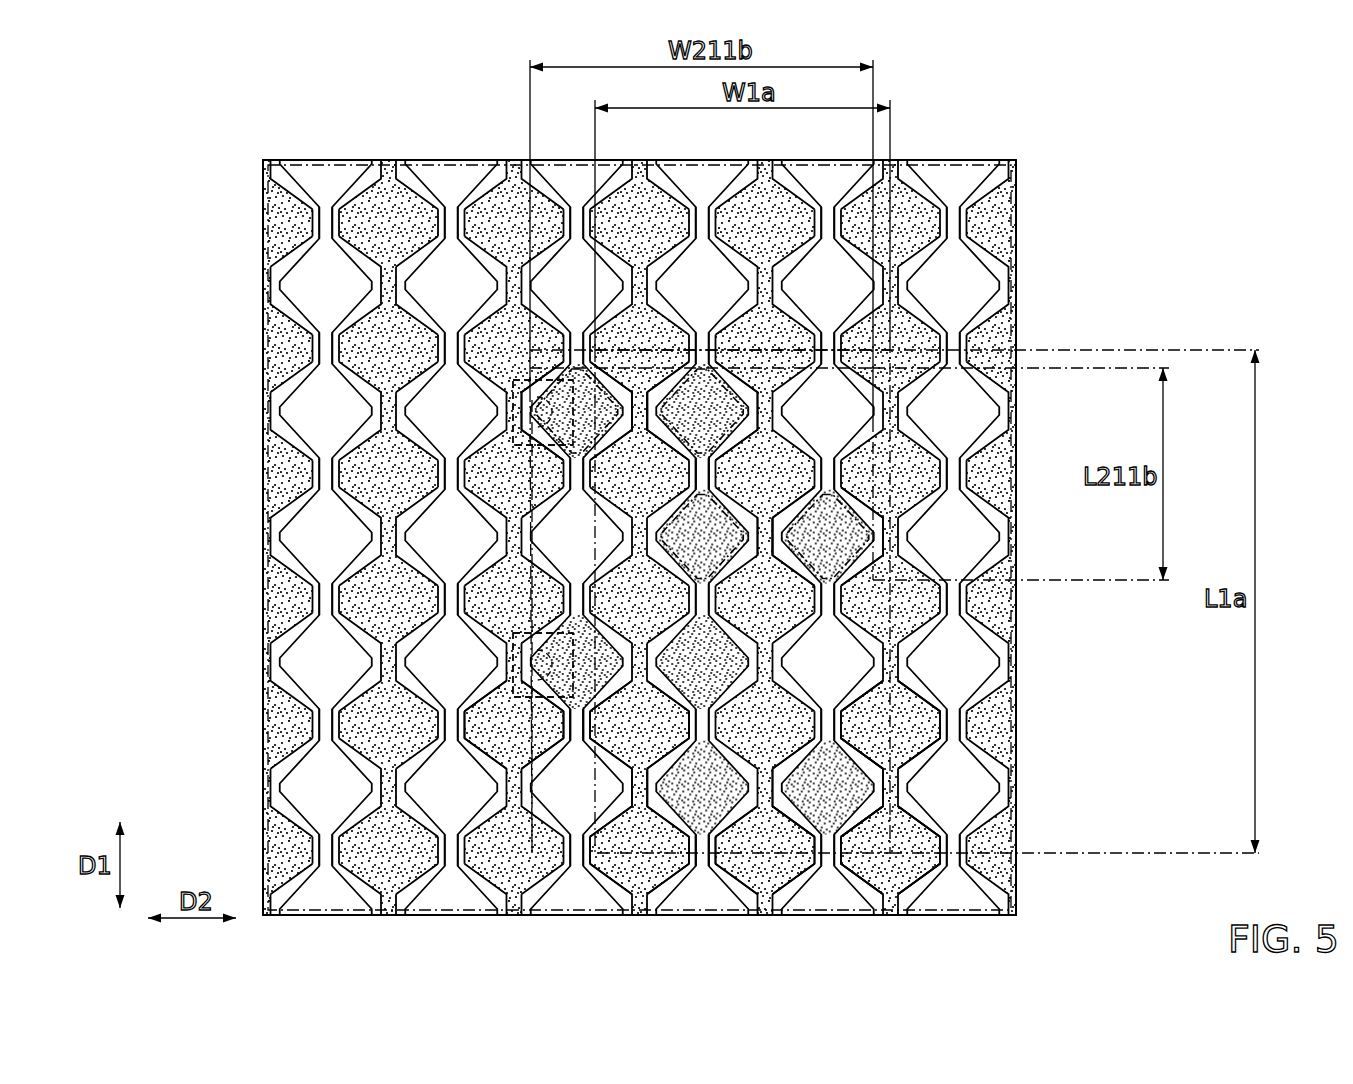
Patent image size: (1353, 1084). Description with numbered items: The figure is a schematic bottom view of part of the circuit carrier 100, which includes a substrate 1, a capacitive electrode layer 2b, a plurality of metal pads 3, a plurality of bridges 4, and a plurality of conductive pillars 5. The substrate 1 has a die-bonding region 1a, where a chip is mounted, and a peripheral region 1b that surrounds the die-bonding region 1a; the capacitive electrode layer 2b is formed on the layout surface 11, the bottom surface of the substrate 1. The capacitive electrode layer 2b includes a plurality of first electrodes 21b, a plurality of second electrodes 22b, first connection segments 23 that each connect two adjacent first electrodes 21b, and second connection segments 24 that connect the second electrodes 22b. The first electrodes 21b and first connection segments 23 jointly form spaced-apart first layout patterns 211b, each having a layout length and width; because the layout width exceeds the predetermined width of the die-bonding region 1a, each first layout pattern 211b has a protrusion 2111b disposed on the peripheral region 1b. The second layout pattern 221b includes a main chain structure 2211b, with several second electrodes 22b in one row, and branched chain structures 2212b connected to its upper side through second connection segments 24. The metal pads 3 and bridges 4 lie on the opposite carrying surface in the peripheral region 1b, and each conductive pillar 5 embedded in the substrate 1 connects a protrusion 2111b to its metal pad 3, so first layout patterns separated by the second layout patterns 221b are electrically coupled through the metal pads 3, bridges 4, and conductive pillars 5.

The circuit carrier 100 is at (1013, 128).
The substrate 1 is at (256, 277).
The layout surface 11 is at (264, 150).
The capacitive electrode layer 2b is at (438, 150).
The first electrode 21b is at (588, 395).
The second electrode 22b is at (507, 747).
The first connection segment 23 is at (639, 408).
The second connection segment 24 is at (577, 728).
The first layout pattern 211b is at (747, 370).
The protrusion 2111b is at (527, 413).
The metal pad 3 is at (518, 386).
The bridge 4 is at (524, 600).
The conductive pillar 5 is at (526, 408).
The die-bonding region 1a is at (905, 695).
The peripheral region 1b is at (1024, 615).
The second layout pattern 221b is at (1118, 870).
The main chain structure 2211b is at (920, 878).
The branched chain structure 2212b is at (916, 757).